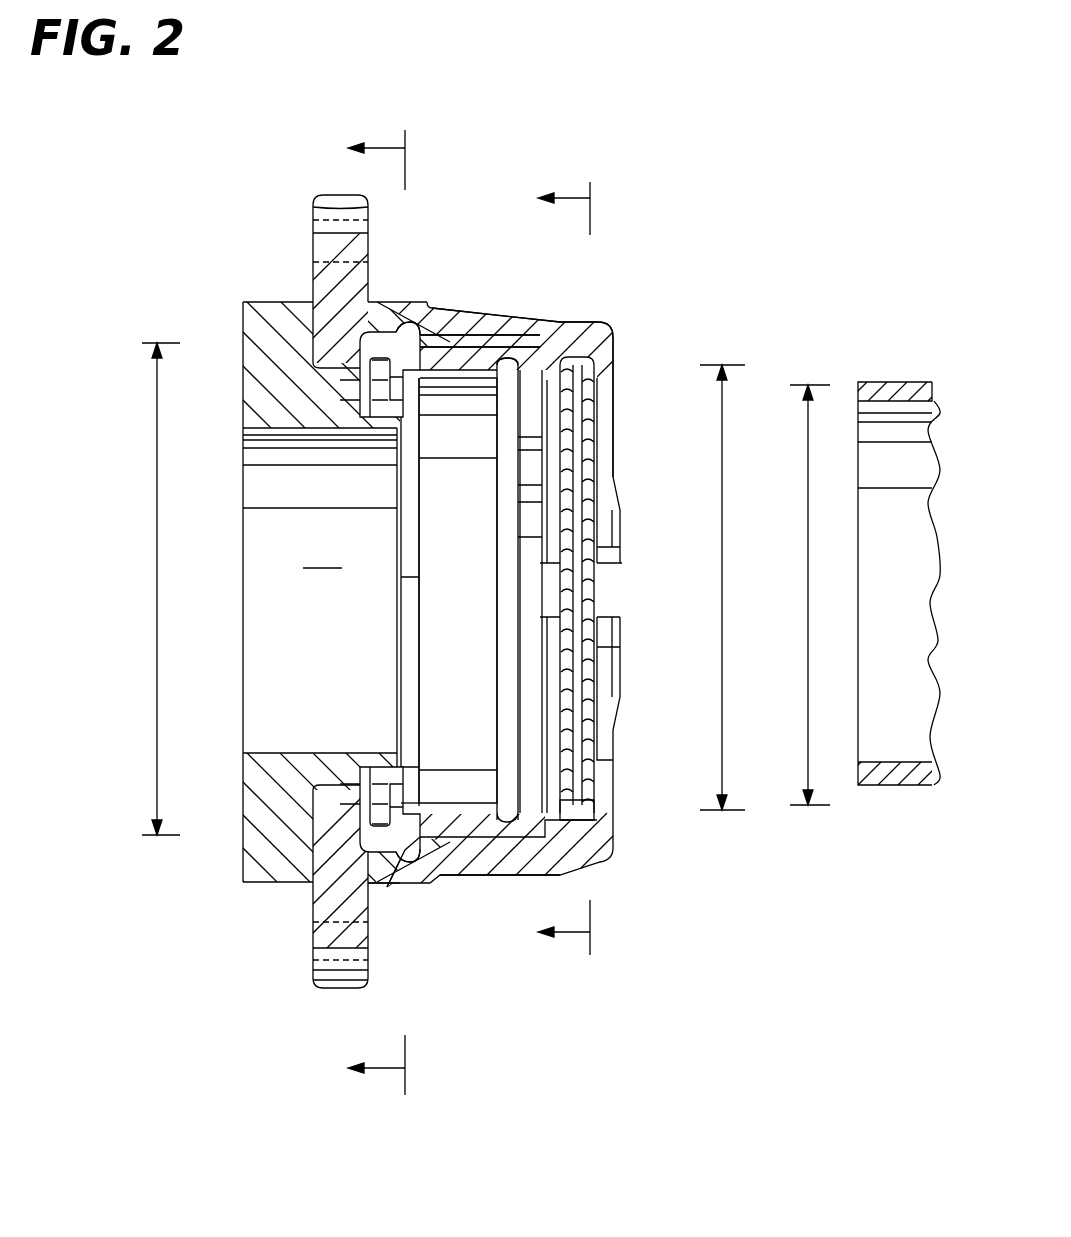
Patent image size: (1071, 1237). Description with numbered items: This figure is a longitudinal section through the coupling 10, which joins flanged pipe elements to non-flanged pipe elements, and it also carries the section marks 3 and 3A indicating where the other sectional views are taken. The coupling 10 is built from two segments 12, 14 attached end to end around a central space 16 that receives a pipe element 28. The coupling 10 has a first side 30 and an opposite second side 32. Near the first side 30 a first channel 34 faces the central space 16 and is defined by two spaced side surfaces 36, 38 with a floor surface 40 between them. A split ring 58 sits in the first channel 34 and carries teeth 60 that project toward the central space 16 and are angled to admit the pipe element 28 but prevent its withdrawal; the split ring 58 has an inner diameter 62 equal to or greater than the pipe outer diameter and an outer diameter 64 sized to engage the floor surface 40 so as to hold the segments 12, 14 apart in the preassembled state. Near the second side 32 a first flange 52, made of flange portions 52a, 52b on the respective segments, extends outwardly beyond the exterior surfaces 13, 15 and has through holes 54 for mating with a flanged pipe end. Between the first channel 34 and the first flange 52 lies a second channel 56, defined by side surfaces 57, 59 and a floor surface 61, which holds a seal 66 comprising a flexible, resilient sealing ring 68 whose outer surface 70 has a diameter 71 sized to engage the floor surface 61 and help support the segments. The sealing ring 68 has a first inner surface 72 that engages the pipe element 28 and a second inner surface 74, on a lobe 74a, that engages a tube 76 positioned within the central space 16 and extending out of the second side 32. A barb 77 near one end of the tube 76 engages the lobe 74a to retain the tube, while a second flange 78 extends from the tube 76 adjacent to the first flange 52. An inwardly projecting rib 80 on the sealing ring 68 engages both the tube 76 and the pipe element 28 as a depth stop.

The coupling 10 is at (686, 217).
The segment 12 is at (505, 322).
The exterior surface 13 is at (440, 308).
The segment 14 is at (530, 878).
The exterior surface 15 is at (380, 885).
The central space 16 is at (322, 549).
The pipe element 28 is at (917, 382).
The first side 30 is at (612, 365).
The second side 32 is at (310, 300).
The first channel 34 is at (598, 342).
The side surface 36 is at (608, 357).
The side surface 38 is at (548, 368).
The floor surface 40 is at (552, 372).
The first flange 52 is at (372, 982).
The flange portion 52a is at (348, 194).
The flange portion 52b is at (345, 992).
The through holes 54 is at (318, 210).
The second channel 56 is at (405, 864).
The side surface 57 is at (362, 378).
The split ring 58 is at (602, 759).
The side surface 59 is at (510, 358).
The teeth 60 is at (597, 592).
The floor surface 61 is at (410, 322).
The inner diameter 62 is at (808, 432).
The outer diameter 64 is at (725, 605).
The seal 66 is at (468, 878).
The sealing ring 68 is at (458, 590).
The outer surface 70 is at (452, 336).
The diameter 71 is at (155, 562).
The first ring inner surface 72 is at (520, 473).
The second ring inner surface 74 is at (380, 386).
The lobe 74a is at (305, 428).
The tube 76 is at (372, 412).
The barb 77 is at (382, 800).
The second flange 78 is at (285, 878).
The rib 80 is at (410, 780).
The section line 3- 3 is at (569, 568).
The section line 3A- 3A is at (386, 612).